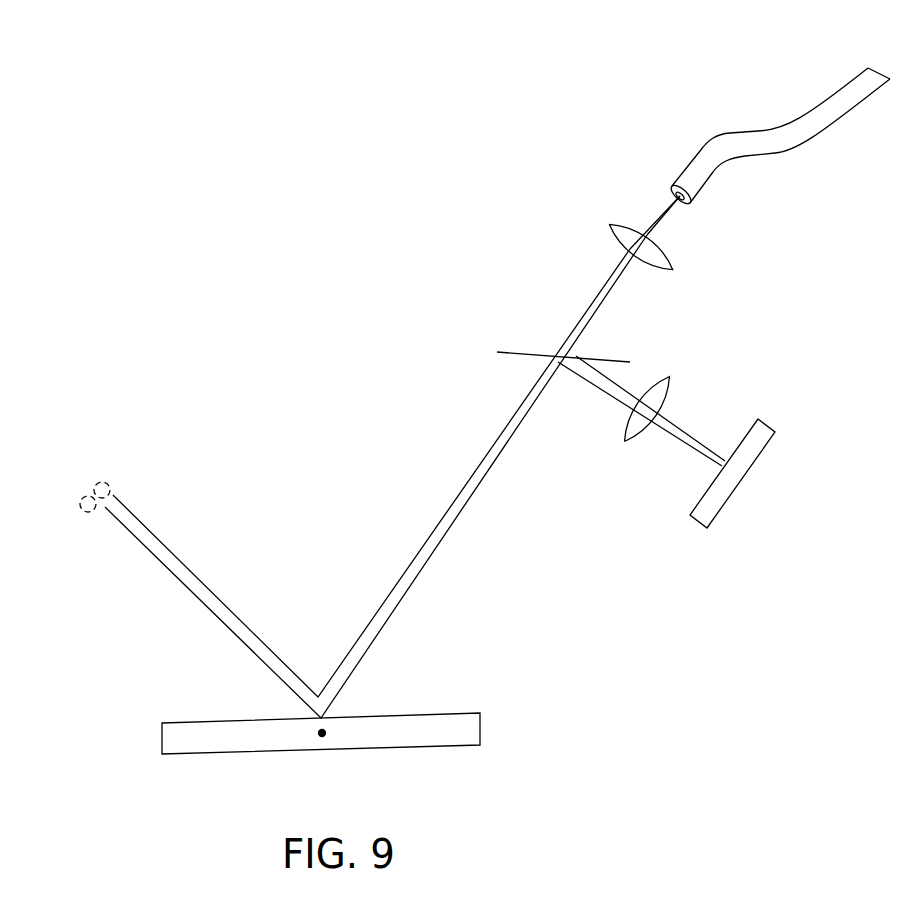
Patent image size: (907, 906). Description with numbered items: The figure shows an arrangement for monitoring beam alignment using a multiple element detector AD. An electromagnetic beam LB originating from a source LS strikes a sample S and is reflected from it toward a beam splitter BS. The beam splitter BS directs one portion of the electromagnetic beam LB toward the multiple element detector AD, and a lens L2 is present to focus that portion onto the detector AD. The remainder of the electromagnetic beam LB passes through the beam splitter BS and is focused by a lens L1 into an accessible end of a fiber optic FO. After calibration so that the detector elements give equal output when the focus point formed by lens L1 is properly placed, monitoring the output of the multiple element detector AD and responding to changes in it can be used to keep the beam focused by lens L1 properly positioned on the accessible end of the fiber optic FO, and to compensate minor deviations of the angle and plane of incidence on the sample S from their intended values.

The fiber optic FO is at (810, 98).
The lens L1 is at (609, 218).
The beam splitter BS is at (523, 347).
The lens L2 is at (675, 379).
The multiple element detector AD is at (757, 471).
The electromagnetic beam LB is at (462, 475).
The light source LS is at (77, 479).
The sample S is at (457, 757).